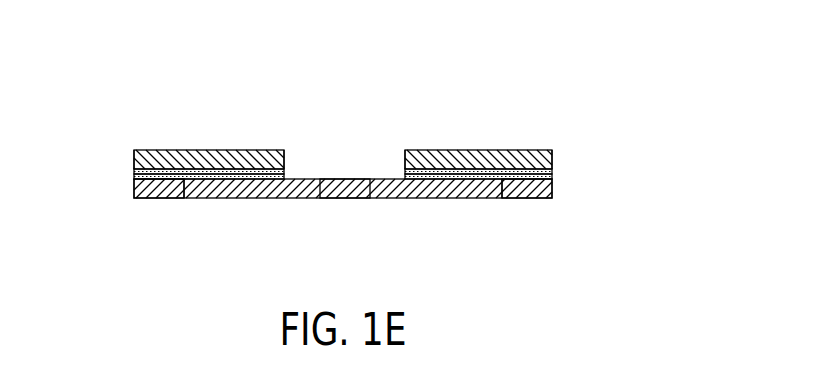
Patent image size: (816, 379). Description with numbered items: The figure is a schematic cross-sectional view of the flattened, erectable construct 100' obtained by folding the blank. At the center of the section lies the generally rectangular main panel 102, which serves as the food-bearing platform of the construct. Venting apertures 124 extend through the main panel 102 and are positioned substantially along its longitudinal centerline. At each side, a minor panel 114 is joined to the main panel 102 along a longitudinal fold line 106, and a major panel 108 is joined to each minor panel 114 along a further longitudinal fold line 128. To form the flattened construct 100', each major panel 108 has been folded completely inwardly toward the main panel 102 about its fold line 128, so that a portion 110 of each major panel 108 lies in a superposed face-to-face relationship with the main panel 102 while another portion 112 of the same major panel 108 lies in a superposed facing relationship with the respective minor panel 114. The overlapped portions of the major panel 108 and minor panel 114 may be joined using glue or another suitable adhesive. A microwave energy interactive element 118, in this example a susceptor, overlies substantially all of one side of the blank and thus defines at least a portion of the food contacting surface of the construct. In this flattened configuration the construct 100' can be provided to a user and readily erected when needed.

The flattened construct 100' is at (387, 139).
The main panel 102 is at (415, 198).
The longitudinal fold lines 106 is at (186, 184).
The major panel 108 is at (212, 149).
The portion of major panel 110 is at (251, 149).
The portion of major panel 112 is at (161, 149).
The minor panels 114 is at (153, 198).
The microwave energy interactive element 118 is at (134, 172).
The venting apertures 124 is at (343, 198).
The longitudinal fold lines 128 is at (135, 149).